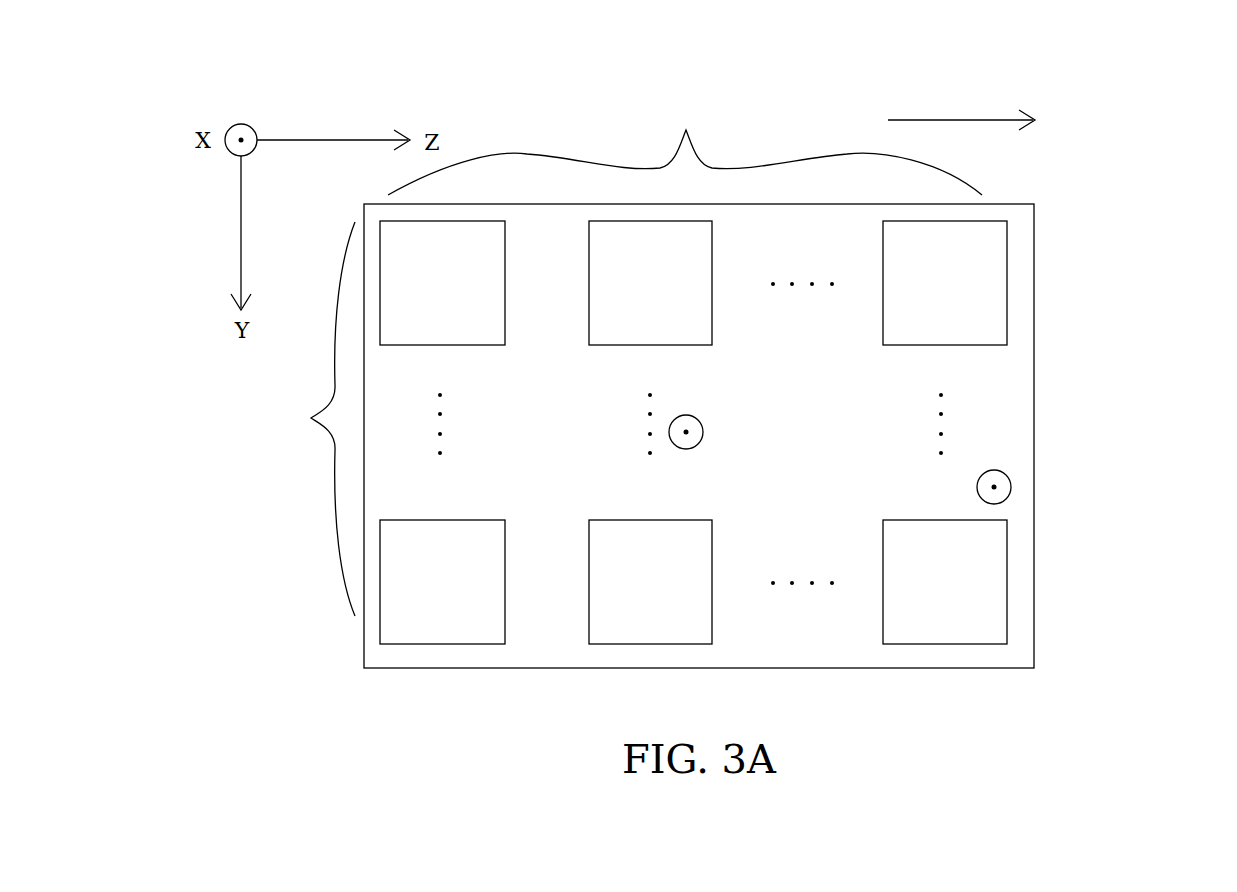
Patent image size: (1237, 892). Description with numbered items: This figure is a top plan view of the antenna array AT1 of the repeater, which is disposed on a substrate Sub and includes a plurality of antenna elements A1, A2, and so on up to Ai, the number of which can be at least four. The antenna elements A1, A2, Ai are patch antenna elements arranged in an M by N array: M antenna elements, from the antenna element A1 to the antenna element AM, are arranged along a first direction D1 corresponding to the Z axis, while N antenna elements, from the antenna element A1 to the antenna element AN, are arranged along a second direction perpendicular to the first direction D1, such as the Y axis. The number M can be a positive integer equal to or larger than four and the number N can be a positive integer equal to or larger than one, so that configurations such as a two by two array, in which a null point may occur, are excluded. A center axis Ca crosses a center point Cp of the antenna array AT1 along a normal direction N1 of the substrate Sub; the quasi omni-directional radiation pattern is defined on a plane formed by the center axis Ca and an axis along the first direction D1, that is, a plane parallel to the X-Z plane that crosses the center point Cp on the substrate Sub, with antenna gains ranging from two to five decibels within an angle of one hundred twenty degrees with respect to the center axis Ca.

The antenna array AT1 is at (1103, 195).
The substrate Sub is at (1035, 435).
The antenna element A1 is at (442, 283).
The antenna element A2 is at (650, 283).
The antenna element AM is at (945, 283).
The antenna element AN is at (442, 582).
The antenna element Ai is at (945, 582).
The number of antenna elements along the first direction M is at (685, 146).
The number of antenna elements along the second direction N is at (316, 419).
The center axis Ca is at (706, 432).
The center point Cp is at (686, 434).
The normal direction N1 is at (973, 487).
The first direction D1 is at (986, 120).